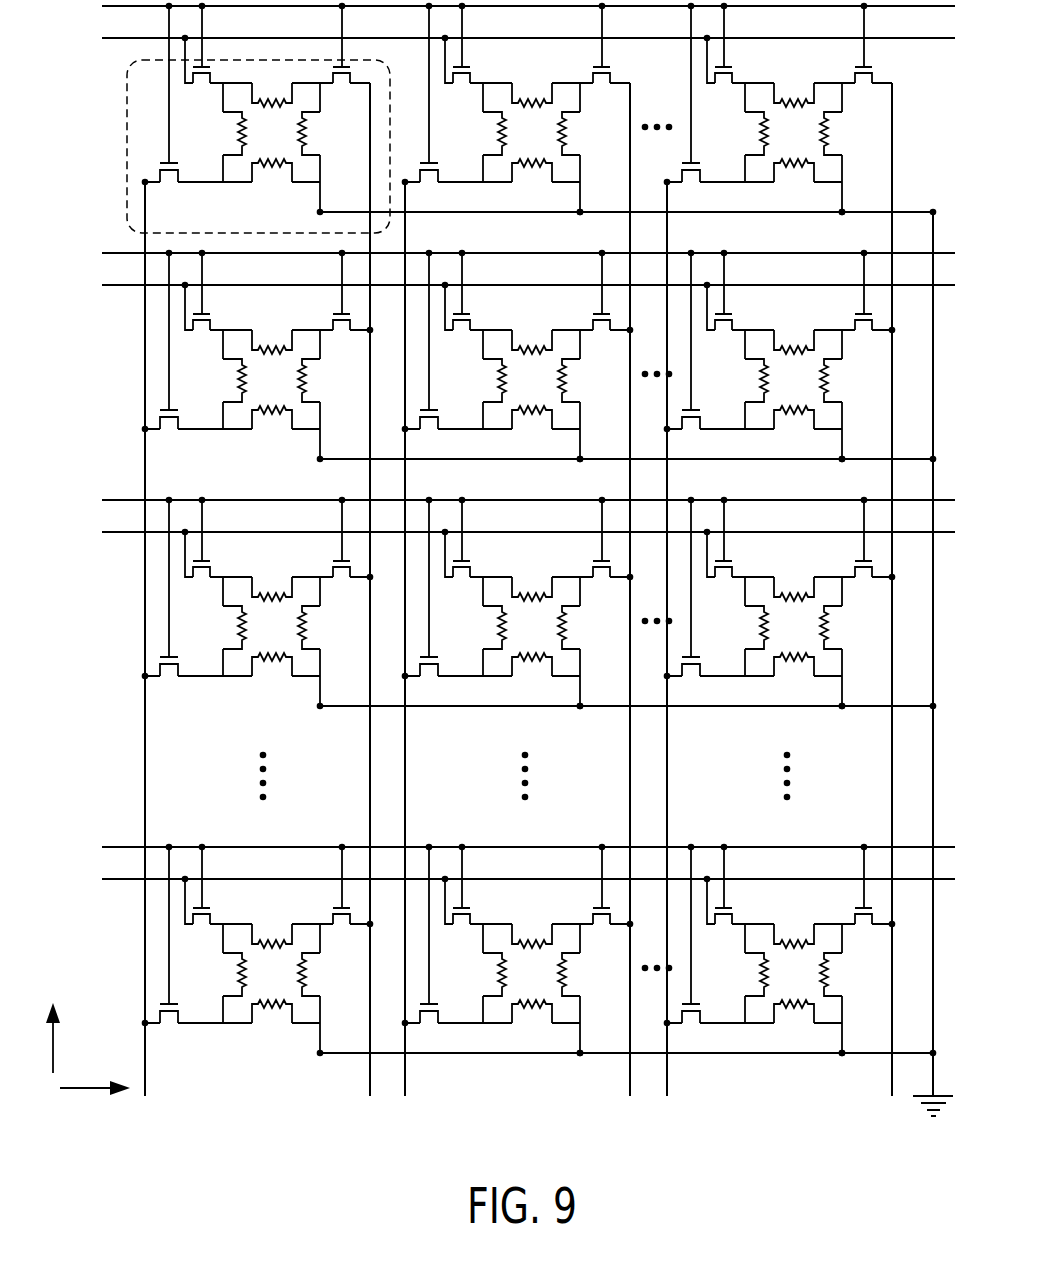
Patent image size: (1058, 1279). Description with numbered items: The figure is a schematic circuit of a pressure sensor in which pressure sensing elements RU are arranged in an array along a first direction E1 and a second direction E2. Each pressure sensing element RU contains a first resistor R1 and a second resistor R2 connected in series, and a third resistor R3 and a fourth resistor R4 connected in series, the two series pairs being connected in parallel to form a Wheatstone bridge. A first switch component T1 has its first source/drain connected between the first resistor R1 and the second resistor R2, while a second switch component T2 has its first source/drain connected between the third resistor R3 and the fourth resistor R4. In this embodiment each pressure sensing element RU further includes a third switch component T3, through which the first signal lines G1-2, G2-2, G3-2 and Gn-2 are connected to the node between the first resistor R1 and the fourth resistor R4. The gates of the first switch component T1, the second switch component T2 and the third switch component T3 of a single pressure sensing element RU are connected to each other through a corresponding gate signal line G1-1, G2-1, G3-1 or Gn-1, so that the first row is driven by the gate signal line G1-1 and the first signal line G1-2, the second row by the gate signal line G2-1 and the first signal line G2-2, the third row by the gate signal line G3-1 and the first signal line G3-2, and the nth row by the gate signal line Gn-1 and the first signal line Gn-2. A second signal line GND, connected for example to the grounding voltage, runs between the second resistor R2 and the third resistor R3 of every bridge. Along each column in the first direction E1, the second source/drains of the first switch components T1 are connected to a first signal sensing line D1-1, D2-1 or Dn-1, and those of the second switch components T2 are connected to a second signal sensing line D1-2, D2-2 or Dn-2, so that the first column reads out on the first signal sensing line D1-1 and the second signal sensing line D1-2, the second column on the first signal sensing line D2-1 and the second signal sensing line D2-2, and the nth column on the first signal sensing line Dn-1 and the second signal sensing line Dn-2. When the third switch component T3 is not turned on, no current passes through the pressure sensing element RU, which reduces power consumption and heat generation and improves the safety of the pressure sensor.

The pressure sensing element RU is at (127, 143).
The first switch component T1 is at (172, 107).
The second switch component T2 is at (345, 60).
The third switch component T3 is at (200, 60).
The first resistor R1 is at (219, 133).
The second resistor R2 is at (272, 180).
The third resistor R3 is at (319, 133).
The fourth resistor R4 is at (272, 89).
The gate signal line G1-1 is at (500, 9).
The first signal line G1-2 is at (500, 38).
The gate signal line G2-1 is at (500, 253).
The first signal line G2-2 is at (500, 285).
The gate signal line G3-1 is at (500, 500).
The first signal line G3-2 is at (500, 532).
The gate signal line Gn-1 is at (500, 847).
The first signal line Gn-2 is at (500, 879).
The first signal sensing line D1-1 is at (176, 647).
The second signal sensing line D1-2 is at (335, 598).
The first signal sensing line D2-1 is at (436, 647).
The second signal sensing line D2-2 is at (595, 598).
The first signal sensing line Dn-1 is at (697, 647).
The second signal sensing line Dn-2 is at (856, 598).
The second signal line GND is at (936, 682).
The first direction E1 is at (55, 1022).
The second direction E2 is at (99, 1106).